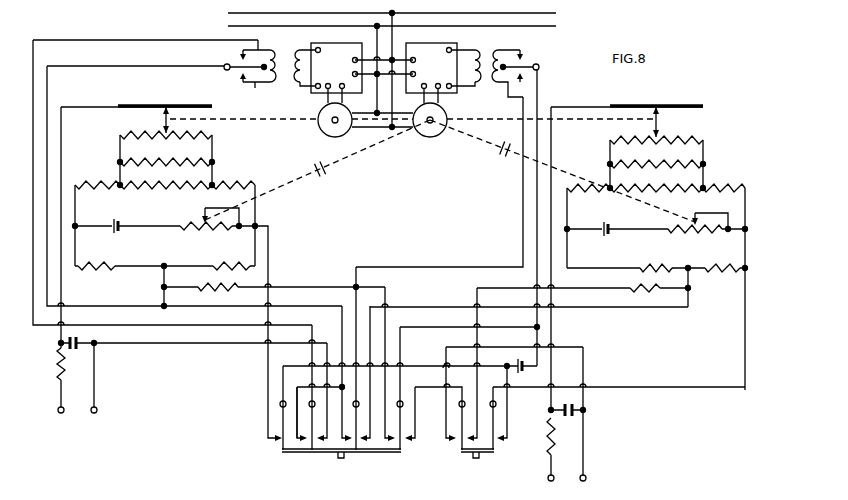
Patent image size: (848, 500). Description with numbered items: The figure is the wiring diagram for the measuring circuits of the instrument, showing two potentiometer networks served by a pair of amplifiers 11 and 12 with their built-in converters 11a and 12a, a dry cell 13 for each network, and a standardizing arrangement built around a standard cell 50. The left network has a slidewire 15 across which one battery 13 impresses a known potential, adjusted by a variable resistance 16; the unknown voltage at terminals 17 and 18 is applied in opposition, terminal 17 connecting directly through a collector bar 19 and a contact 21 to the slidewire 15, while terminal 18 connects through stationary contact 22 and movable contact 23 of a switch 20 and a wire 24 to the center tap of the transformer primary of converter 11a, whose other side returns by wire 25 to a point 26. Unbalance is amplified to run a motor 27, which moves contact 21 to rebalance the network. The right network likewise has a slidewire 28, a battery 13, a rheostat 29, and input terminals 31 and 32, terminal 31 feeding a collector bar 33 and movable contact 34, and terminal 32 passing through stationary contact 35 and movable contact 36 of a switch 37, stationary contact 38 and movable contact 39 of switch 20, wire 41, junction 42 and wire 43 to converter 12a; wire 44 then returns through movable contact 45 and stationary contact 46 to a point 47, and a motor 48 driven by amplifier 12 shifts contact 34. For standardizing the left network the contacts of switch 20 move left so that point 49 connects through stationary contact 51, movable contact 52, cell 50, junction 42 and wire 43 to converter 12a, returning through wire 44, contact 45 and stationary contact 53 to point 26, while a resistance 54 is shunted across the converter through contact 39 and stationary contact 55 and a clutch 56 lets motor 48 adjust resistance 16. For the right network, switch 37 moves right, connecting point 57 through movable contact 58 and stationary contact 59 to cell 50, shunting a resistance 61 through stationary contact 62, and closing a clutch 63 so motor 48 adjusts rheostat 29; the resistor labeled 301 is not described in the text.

The amplifier 11 is at (339, 46).
The converter 11a is at (248, 82).
The amplifier 12 is at (429, 46).
The converter 12a is at (509, 51).
The dry cell 13 is at (113, 221).
The slidewire 15 is at (128, 135).
The variable resistance 16 is at (196, 232).
The terminal 17 is at (58, 407).
The terminal 18 is at (97, 407).
The collector bar 19 is at (145, 105).
The switch 20 is at (384, 454).
The contact 21 is at (162, 119).
The stationary contact 22 is at (321, 450).
The movable contact 23 is at (304, 449).
The wire 24 is at (170, 326).
The wire 25 is at (47, 85).
The point 26 is at (162, 268).
The motor 27 is at (318, 111).
The slidewire 28 is at (683, 138).
The rheostat 29 is at (692, 235).
The terminal 31 is at (548, 478).
The terminal 32 is at (583, 478).
The collector bar 33 is at (639, 107).
The movable contact 34 is at (656, 119).
The stationary contact 35 is at (457, 440).
The movable contact 36 is at (460, 452).
The switch 37 is at (490, 455).
The stationary contact 38 is at (416, 407).
The movable contact 39 is at (402, 445).
The wire 41 is at (416, 327).
The junction 42 is at (536, 326).
The wire 43 is at (537, 225).
The wire 44 is at (523, 193).
The movable contact 45 is at (358, 412).
The stationary contact 46 is at (366, 452).
The point 47 is at (692, 272).
The motor 48 is at (447, 115).
The point 49 is at (257, 225).
The standard cell 50 is at (521, 371).
The stationary contact 51 is at (272, 442).
The movable contact 52 is at (277, 450).
The stationary contact 53 is at (346, 450).
The resistance 54 is at (226, 290).
The stationary contact 55 is at (392, 452).
The clutch 56 is at (326, 172).
The point 57 is at (745, 278).
The movable contact 58 is at (493, 452).
The stationary contact 59 is at (500, 442).
The resistance 61 is at (652, 292).
The stationary contact 62 is at (477, 458).
The clutch 63 is at (497, 154).
The resistor 301 is at (588, 163).